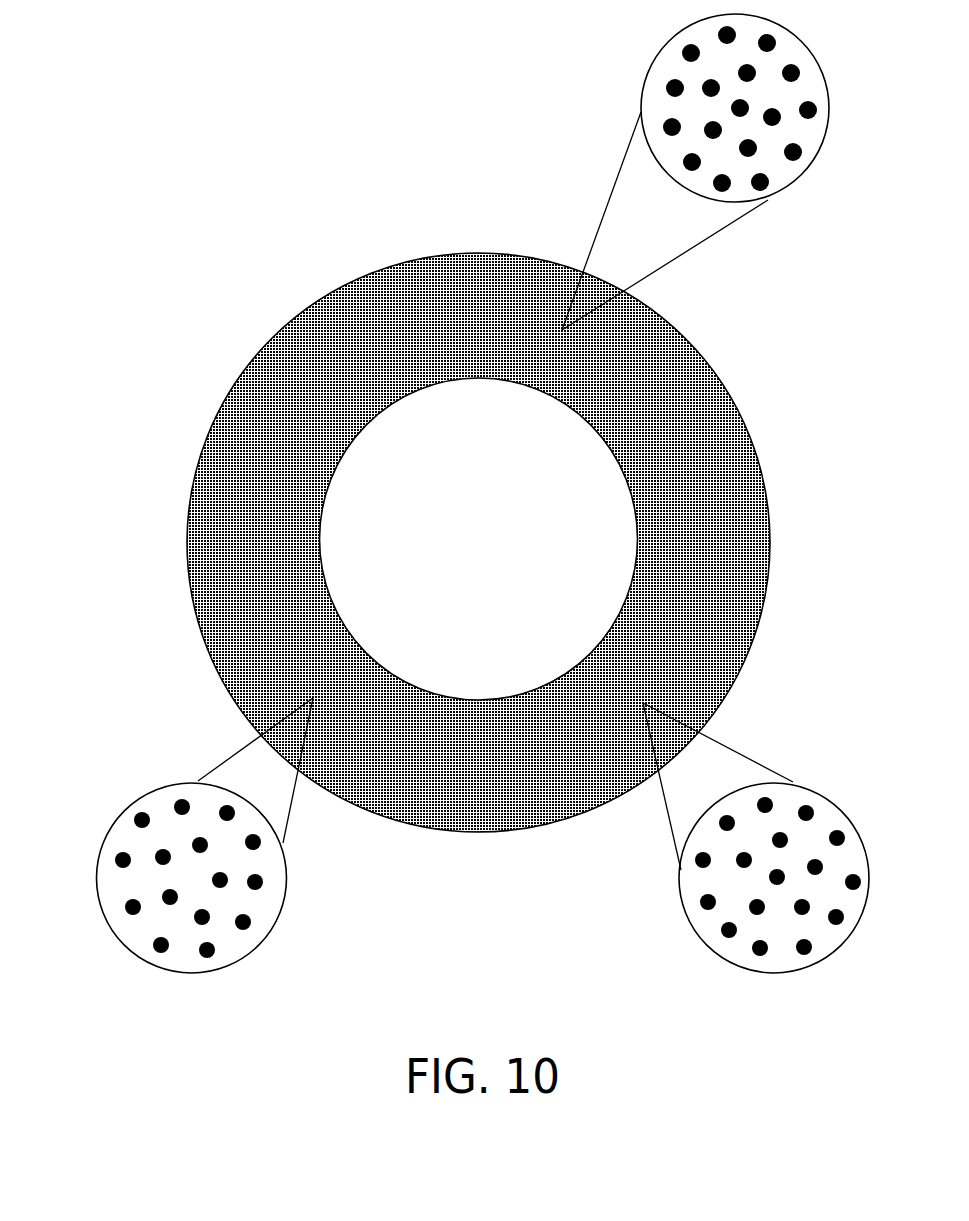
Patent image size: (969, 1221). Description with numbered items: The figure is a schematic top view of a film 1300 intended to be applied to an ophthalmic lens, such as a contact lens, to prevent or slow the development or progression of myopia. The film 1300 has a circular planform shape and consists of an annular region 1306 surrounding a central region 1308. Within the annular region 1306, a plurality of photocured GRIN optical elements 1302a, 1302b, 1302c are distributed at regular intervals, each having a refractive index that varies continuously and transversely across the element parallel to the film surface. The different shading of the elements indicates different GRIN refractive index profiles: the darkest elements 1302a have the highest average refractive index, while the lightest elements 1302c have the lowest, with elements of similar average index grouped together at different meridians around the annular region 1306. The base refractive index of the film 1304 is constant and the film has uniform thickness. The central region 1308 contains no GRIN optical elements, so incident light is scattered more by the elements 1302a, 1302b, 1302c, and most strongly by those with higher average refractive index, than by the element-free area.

The film 1300 is at (326, 268).
The GRIN optical elements 1302a is at (662, 93).
The GRIN optical elements 1302b is at (693, 860).
The GRIN optical elements 1302c is at (265, 881).
The base refractive index of the film 1304 is at (673, 68).
The annular region 1306 is at (225, 448).
The central region 1308 is at (365, 487).